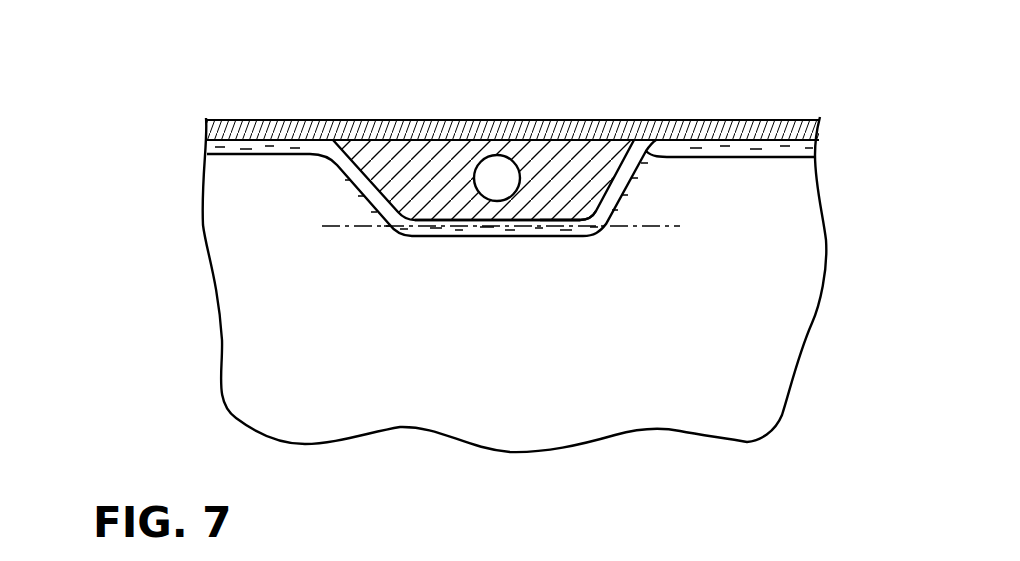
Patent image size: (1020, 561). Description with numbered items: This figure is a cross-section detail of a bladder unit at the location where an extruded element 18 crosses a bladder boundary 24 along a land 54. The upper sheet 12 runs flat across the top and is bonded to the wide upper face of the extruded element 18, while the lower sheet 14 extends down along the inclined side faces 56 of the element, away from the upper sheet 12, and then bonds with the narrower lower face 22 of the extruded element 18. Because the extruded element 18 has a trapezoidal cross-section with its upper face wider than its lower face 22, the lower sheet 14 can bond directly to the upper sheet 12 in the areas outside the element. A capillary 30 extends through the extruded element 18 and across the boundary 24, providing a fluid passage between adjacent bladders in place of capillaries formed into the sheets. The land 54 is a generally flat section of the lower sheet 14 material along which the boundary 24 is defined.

The upper sheet 12 is at (362, 120).
The lower sheet 14 is at (627, 194).
The extruded element 18 is at (427, 157).
The lower face 22 is at (470, 220).
The boundary 24 is at (346, 229).
The capillary 30 is at (503, 166).
The land 54 is at (542, 220).
The side faces 56 is at (370, 152).